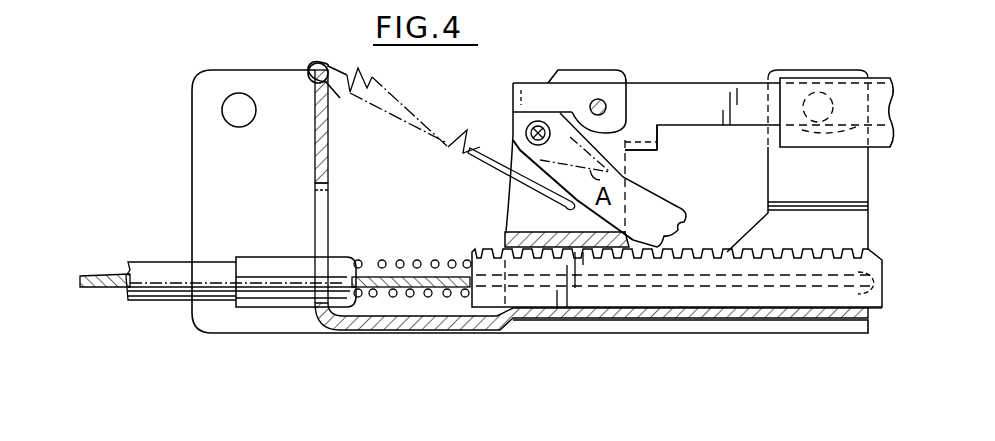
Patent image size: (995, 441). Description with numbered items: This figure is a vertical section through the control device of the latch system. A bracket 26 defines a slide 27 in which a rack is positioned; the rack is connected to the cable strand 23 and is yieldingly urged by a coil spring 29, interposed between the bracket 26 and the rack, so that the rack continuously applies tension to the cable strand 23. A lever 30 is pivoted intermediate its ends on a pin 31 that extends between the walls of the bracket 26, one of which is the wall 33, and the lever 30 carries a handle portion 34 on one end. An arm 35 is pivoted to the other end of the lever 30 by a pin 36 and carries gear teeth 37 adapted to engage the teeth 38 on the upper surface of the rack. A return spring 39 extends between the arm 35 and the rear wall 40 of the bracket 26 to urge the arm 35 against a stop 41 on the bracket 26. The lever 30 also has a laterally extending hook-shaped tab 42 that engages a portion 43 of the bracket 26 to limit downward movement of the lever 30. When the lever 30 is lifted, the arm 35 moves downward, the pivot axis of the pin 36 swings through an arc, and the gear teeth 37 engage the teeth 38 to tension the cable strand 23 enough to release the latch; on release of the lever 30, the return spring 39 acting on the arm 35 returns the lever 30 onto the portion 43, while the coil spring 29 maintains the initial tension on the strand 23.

The cable strand 23 is at (110, 287).
The bracket 26 is at (790, 318).
The slide 27 is at (876, 318).
The coil spring 29 is at (420, 290).
The lever 30 is at (729, 83).
The pin 31 is at (600, 99).
The wall 33 is at (622, 72).
The handle portion 34 is at (876, 78).
The arm 35 is at (640, 193).
The pin 36 is at (538, 120).
The gear teeth 37 is at (683, 216).
The teeth 38 is at (670, 258).
The return spring 39 is at (467, 128).
The rear wall 40 is at (317, 65).
The stop 41 is at (622, 243).
The tab 42 is at (658, 145).
The portion 43 is at (628, 152).